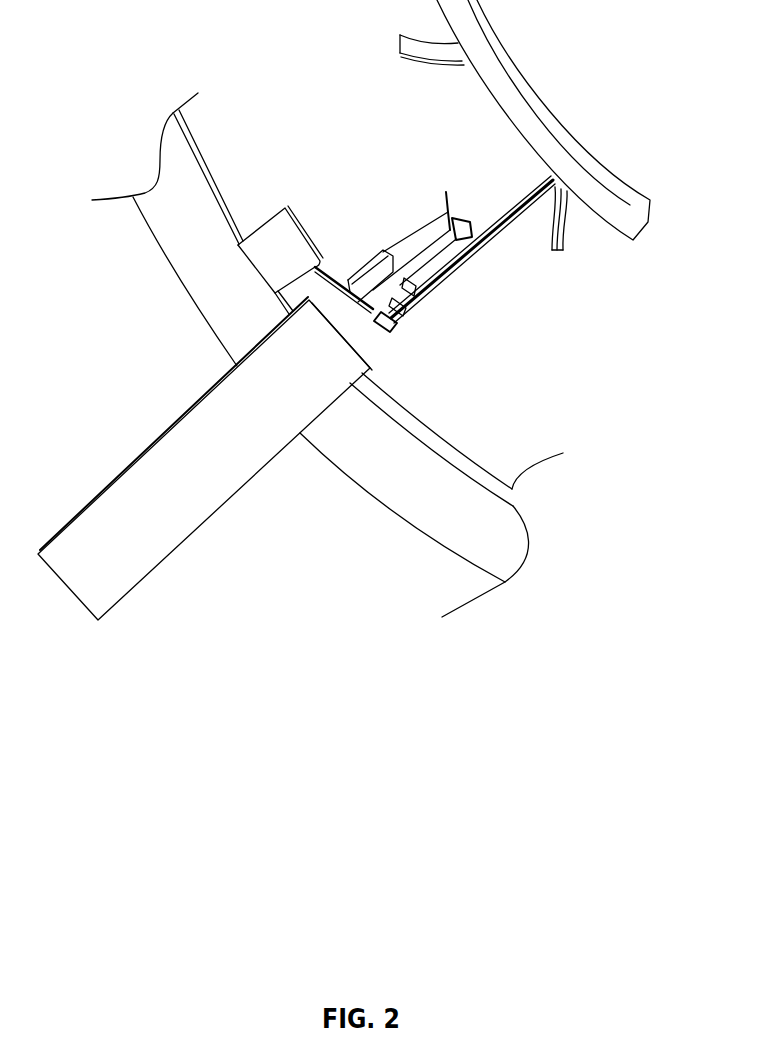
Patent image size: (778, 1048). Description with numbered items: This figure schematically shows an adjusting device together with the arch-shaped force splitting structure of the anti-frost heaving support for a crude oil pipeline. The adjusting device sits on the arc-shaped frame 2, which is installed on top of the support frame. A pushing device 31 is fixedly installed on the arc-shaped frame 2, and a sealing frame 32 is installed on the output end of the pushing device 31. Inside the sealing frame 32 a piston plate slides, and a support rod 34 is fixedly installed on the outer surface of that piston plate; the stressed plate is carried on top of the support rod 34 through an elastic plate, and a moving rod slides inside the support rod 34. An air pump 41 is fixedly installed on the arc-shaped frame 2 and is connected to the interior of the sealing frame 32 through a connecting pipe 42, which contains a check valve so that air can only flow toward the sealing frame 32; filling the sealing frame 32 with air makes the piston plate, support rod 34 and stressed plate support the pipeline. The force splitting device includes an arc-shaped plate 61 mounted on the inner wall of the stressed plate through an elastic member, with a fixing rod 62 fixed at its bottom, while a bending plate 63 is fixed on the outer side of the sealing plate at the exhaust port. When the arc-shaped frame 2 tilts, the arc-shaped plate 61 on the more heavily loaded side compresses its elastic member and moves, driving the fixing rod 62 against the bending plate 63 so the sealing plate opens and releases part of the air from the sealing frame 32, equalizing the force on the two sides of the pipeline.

The arc-shaped frame 2 is at (375, 432).
The pushing device 31 is at (100, 560).
The sealing frame 32 is at (402, 307).
The support rod 34 is at (410, 287).
The air pump 41 is at (285, 240).
The connecting pipe 42 is at (319, 267).
The arc-shaped plate 61 is at (517, 112).
The fixing rod 62 is at (452, 268).
The bending plate 63 is at (397, 320).